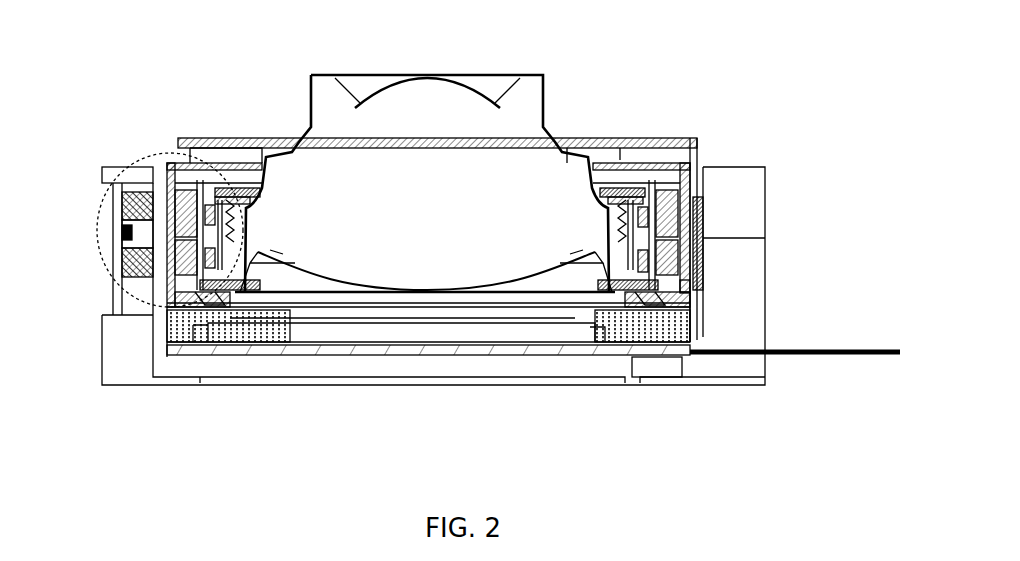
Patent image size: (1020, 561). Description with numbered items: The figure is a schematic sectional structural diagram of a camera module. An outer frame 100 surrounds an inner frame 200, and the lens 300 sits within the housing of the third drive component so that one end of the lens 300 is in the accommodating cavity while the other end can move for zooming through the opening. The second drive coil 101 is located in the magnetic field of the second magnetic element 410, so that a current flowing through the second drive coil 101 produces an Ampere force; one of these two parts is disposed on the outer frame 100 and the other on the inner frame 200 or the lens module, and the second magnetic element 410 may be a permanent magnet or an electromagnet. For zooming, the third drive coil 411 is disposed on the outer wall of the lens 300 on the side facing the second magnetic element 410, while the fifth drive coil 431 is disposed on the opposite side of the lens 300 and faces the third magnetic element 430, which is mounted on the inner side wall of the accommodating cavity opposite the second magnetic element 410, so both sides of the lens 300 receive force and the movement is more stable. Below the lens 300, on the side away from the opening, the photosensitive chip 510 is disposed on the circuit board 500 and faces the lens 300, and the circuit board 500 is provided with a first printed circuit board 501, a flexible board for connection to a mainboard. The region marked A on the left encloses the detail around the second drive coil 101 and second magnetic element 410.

The outer frame 100 is at (737, 252).
The second drive coil 101 is at (128, 177).
The inner frame 200 is at (272, 142).
The lens 300 is at (428, 120).
The second magnetic element 410 is at (130, 283).
The third drive coil 411 is at (205, 190).
The third magnetic element 430 is at (703, 237).
The fifth drive coil 431 is at (641, 213).
The circuit board 500 is at (423, 350).
The first printed circuit board 501 is at (820, 358).
The photosensitive chip 510 is at (362, 332).
The detail region A is at (98, 215).